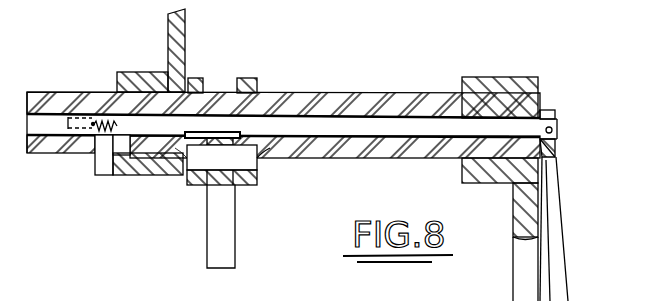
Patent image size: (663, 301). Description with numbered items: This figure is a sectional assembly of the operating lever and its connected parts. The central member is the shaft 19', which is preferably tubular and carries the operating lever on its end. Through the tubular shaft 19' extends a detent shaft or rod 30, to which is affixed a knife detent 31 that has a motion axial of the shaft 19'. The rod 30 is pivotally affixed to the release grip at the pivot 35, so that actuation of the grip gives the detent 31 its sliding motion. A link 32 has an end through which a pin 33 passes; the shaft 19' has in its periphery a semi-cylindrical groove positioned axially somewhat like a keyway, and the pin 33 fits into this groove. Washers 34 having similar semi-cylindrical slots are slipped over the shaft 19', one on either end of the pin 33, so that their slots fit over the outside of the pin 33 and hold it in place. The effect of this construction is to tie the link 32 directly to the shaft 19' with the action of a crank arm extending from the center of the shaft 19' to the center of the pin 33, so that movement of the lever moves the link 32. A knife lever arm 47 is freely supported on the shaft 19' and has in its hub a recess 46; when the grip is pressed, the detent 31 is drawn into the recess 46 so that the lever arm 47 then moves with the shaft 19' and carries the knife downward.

The shaft 19' is at (283, 89).
The detent shaft or rod 30 is at (367, 127).
The knife detent 31 is at (103, 165).
The link 32 is at (225, 228).
The pin 33 is at (250, 162).
The washers 34 is at (192, 80).
The pivot 35 is at (553, 128).
The recess 46 is at (125, 168).
The knife lever arm 47 is at (175, 40).